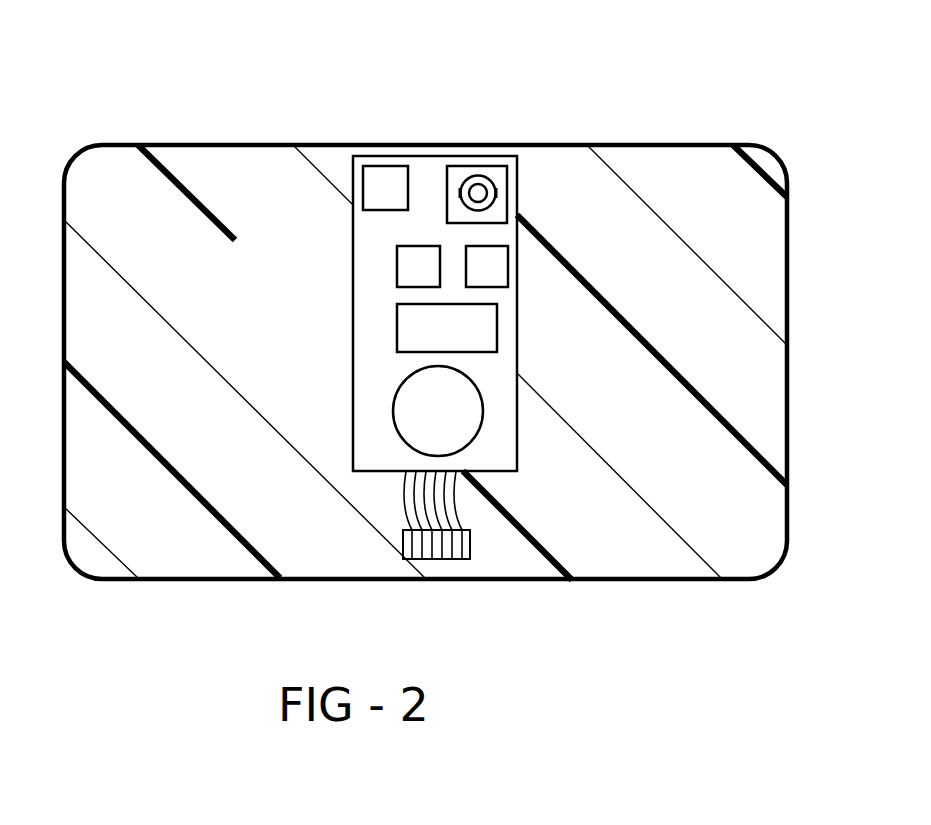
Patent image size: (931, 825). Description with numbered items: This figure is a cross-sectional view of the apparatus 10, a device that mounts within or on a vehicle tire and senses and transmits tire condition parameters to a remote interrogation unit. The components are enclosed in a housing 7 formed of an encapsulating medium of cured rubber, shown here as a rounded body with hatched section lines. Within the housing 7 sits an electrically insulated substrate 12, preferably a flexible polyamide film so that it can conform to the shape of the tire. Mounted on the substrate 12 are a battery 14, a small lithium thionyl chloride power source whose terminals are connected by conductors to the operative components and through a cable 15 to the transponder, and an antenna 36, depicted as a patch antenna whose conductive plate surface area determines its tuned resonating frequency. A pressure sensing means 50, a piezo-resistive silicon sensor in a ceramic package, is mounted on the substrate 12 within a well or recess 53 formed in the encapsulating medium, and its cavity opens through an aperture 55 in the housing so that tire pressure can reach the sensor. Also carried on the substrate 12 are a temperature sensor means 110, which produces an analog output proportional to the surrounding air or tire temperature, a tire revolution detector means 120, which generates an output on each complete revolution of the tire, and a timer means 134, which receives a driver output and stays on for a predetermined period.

The housing 7 is at (117, 167).
The apparatus 10 is at (213, 80).
The substrate 12 is at (513, 460).
The battery 14 is at (416, 432).
The cable 15 is at (465, 508).
The antenna 36 is at (412, 330).
The pressure sensing means 50 is at (478, 192).
The well or recess 53 is at (468, 190).
The aperture 55 is at (492, 187).
The temperature sensor means 110 is at (498, 265).
The tire revolution detector means 120 is at (403, 260).
The timer means 134 is at (390, 175).